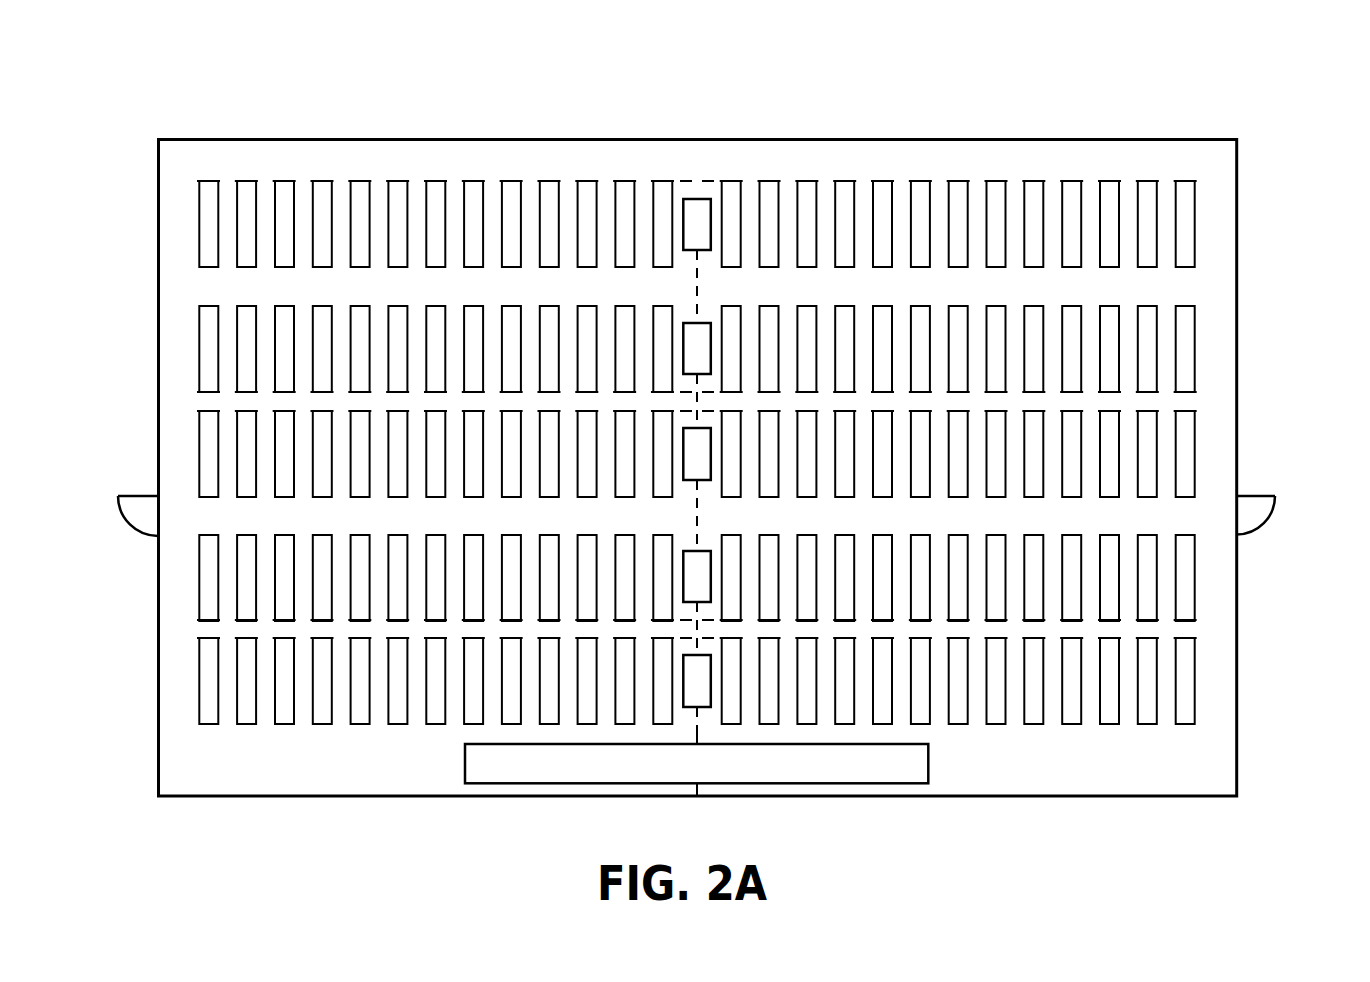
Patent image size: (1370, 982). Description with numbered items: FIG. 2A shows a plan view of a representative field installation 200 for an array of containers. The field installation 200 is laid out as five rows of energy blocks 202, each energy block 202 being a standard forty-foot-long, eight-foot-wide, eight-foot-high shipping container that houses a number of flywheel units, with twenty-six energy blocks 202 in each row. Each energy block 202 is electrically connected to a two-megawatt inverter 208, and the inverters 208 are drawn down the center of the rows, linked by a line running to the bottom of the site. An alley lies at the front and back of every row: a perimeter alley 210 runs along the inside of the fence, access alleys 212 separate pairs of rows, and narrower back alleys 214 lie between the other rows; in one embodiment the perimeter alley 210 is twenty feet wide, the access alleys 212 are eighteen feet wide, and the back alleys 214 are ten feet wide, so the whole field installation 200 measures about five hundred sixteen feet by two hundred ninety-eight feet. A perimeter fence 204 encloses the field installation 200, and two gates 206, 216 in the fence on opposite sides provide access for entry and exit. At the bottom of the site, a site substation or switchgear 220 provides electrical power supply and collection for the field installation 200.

The field installation 200 is at (1215, 44).
The energy block 202 is at (1182, 178).
The perimeter fence 204 is at (1239, 345).
The gate 206 is at (1261, 487).
The inverter 208 is at (697, 194).
The perimeter alley 210 is at (182, 163).
The access alley 212 is at (182, 280).
The back alley 214 is at (182, 402).
The gate 216 is at (124, 487).
The site substation or switchgear 220 is at (892, 788).